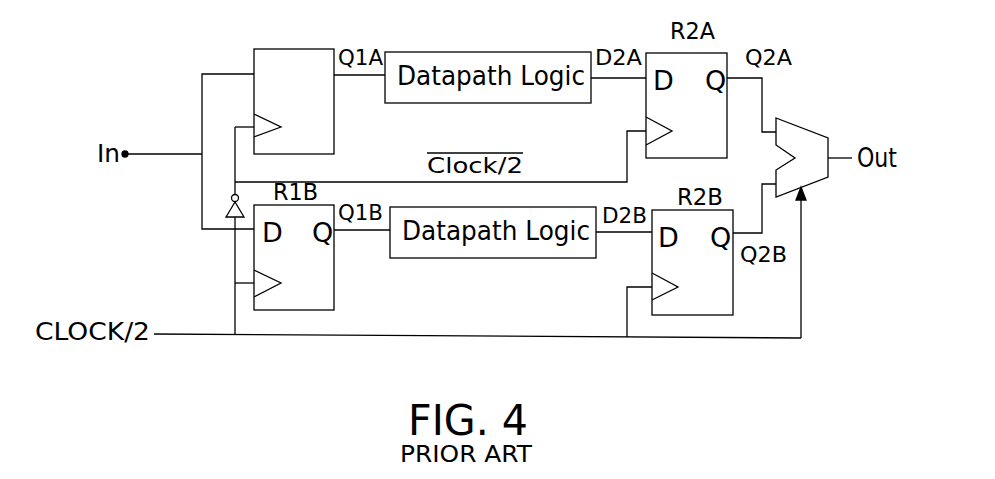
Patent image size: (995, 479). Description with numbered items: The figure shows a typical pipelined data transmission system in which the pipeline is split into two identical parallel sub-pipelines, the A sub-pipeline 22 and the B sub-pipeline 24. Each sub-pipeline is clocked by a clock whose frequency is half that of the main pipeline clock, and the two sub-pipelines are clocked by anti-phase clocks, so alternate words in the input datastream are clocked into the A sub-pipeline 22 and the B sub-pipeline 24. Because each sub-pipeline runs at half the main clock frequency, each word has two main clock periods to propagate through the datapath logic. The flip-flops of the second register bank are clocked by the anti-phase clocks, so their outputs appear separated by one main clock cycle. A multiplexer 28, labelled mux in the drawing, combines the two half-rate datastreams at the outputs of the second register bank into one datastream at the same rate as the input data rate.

The A sub-pipeline 22 is at (240, 67).
The B sub-pipeline 24 is at (227, 238).
The multiplexer 28 is at (818, 190).